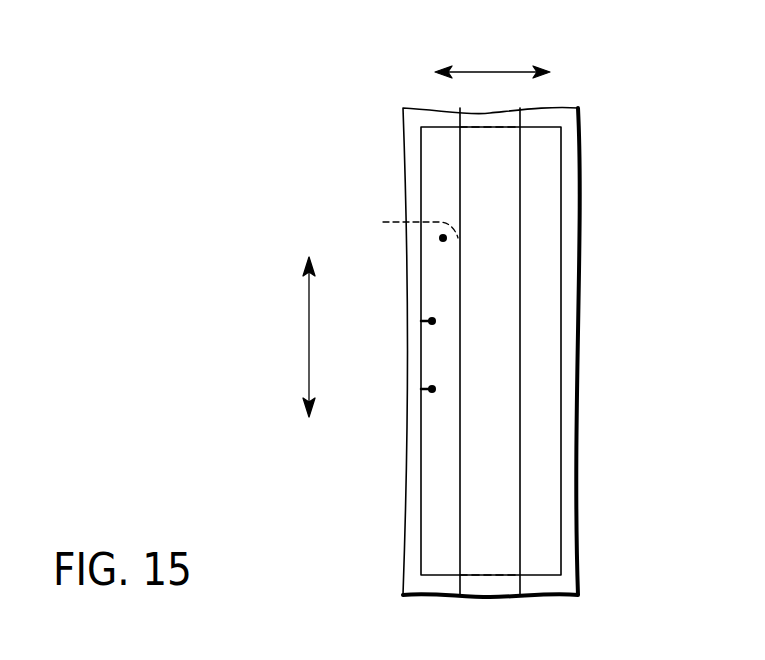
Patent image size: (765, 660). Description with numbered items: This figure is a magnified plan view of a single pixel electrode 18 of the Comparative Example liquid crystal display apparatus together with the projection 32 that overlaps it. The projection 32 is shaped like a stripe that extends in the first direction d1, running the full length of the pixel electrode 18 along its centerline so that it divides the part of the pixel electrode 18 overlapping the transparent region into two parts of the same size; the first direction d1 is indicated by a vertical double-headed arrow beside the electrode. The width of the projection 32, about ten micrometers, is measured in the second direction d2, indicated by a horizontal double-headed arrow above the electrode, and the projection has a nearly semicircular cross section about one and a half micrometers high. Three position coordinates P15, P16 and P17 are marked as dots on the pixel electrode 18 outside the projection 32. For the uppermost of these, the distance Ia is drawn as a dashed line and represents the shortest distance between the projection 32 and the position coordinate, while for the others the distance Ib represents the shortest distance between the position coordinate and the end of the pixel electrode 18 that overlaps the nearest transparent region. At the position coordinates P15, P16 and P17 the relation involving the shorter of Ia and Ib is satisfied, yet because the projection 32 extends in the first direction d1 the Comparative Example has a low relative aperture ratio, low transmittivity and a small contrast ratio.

The pixel electrode 18 is at (549, 203).
The projection 32 is at (498, 281).
The first direction d1 is at (309, 342).
The second direction d2 is at (498, 70).
The shortest distance between projection and position coordinate Ia is at (410, 222).
The shortest distance between position coordinate and pixel electrode end Ib is at (432, 321).
The position coordinate P15 is at (443, 240).
The position coordinate P16 is at (432, 324).
The position coordinate P17 is at (432, 392).